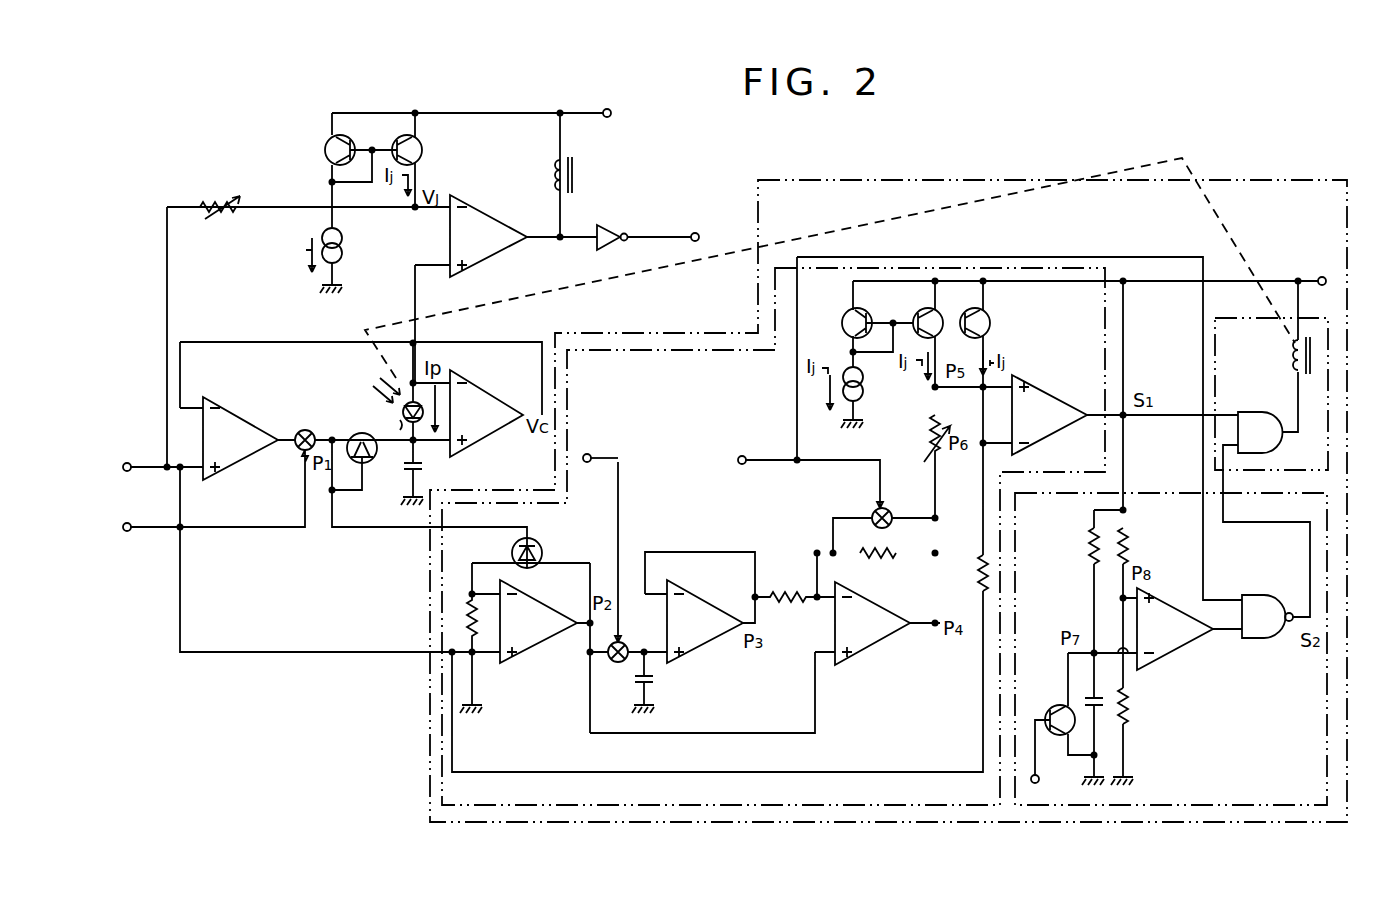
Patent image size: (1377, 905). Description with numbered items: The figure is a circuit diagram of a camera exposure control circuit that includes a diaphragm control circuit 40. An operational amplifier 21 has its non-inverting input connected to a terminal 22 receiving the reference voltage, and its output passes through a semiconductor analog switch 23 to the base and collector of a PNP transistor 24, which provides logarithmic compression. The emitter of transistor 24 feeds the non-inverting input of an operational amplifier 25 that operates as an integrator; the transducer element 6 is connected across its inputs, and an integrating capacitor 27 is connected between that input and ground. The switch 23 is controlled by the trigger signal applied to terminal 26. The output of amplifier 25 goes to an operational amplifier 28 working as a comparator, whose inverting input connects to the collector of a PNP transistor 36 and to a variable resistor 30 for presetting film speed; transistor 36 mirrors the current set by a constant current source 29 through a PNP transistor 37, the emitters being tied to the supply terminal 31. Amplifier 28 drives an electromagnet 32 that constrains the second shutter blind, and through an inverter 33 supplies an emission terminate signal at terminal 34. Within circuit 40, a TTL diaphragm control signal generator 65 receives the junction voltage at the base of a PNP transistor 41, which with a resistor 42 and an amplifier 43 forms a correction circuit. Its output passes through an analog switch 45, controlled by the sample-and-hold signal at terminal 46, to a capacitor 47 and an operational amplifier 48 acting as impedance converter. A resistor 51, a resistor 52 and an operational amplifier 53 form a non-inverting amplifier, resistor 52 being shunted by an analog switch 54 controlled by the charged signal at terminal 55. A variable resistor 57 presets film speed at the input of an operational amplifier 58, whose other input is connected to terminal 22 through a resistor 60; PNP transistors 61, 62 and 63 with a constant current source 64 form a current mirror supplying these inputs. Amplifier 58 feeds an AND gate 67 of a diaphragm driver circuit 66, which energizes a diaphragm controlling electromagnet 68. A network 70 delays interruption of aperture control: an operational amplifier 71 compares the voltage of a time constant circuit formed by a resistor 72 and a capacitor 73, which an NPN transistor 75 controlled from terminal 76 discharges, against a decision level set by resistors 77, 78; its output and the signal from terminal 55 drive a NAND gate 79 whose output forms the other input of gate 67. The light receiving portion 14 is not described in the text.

The transducer element 6 is at (410, 396).
The light receiving circuit 14 is at (400, 430).
The operational amplifier 21 is at (246, 430).
The terminal 22 is at (129, 471).
The semiconductor analog switch 23 is at (305, 430).
The PNP transistor 24 is at (358, 433).
The operational amplifier 25 is at (494, 400).
The terminal 26 is at (129, 531).
The integrating capacitor 27 is at (424, 466).
The operational amplifier 28 is at (495, 226).
The constant current source 29 is at (342, 246).
The variable resistor 30 is at (214, 202).
The terminal 31 is at (609, 117).
The electromagnet 32 is at (574, 175).
The inverter 33 is at (610, 227).
The terminal 34 is at (699, 239).
The PNP transistor 36 is at (419, 148).
The PNP transistor 37 is at (327, 146).
The diaphragm control circuit 40 is at (1284, 183).
The PNP transistor 41 is at (538, 542).
The resistor 42 is at (466, 615).
The amplifier 43 is at (552, 614).
The semiconductor analog switch 45 is at (618, 662).
The terminal 46 is at (588, 462).
The capacitor 47 is at (653, 680).
The operational amplifier 48 is at (712, 620).
The resistor 51 is at (782, 596).
The resistor 52 is at (878, 558).
The operational amplifier 53 is at (886, 642).
The semiconductor analog switch 54 is at (890, 510).
The terminal 55 is at (743, 464).
The variable resistor 57 is at (942, 455).
The operational amplifier 58 is at (1062, 408).
The resistor 60 is at (978, 565).
The PNP transistor 61 is at (968, 312).
The PNP transistor 62 is at (918, 312).
The PNP transistor 63 is at (848, 312).
The constant current source 64 is at (863, 382).
The TTL diaphragm control signal generator 65 is at (1108, 268).
The diaphragm driver circuit 66 is at (1266, 318).
The AND gate 67 is at (1265, 414).
The diaphragm controlling electromagnet 68 is at (1292, 362).
The network 70 is at (1167, 493).
The operational amplifier 71 is at (1164, 612).
The resistor 72 is at (1089, 548).
The capacitor 73 is at (1082, 698).
The NPN transistor 75 is at (1050, 710).
The terminal 76 is at (1039, 781).
The resistor 77 is at (1127, 542).
The resistor 78 is at (1130, 708).
The NAND gate 79 is at (1270, 603).